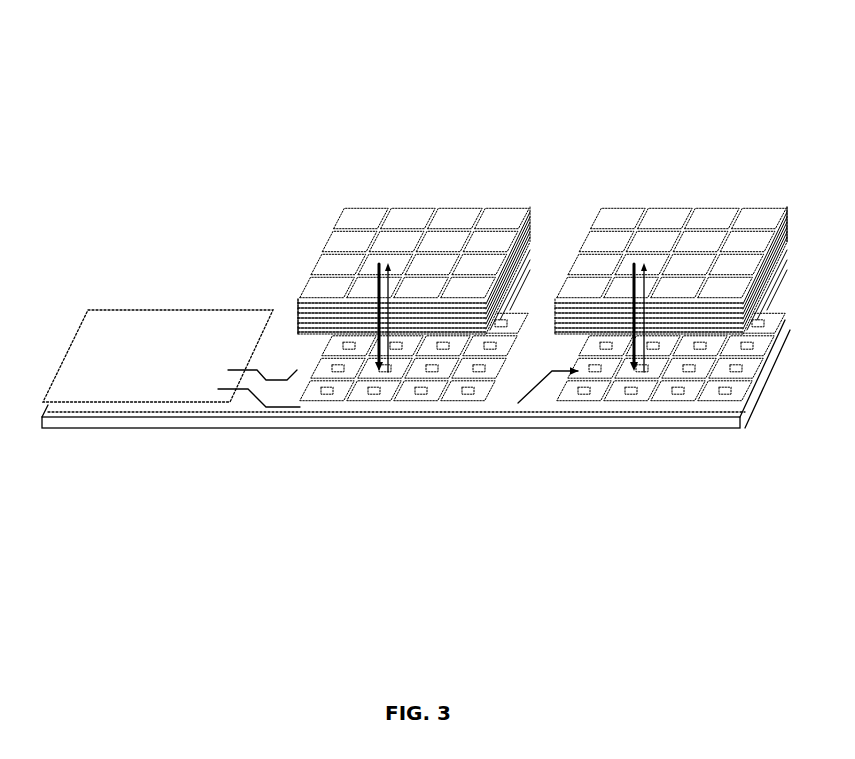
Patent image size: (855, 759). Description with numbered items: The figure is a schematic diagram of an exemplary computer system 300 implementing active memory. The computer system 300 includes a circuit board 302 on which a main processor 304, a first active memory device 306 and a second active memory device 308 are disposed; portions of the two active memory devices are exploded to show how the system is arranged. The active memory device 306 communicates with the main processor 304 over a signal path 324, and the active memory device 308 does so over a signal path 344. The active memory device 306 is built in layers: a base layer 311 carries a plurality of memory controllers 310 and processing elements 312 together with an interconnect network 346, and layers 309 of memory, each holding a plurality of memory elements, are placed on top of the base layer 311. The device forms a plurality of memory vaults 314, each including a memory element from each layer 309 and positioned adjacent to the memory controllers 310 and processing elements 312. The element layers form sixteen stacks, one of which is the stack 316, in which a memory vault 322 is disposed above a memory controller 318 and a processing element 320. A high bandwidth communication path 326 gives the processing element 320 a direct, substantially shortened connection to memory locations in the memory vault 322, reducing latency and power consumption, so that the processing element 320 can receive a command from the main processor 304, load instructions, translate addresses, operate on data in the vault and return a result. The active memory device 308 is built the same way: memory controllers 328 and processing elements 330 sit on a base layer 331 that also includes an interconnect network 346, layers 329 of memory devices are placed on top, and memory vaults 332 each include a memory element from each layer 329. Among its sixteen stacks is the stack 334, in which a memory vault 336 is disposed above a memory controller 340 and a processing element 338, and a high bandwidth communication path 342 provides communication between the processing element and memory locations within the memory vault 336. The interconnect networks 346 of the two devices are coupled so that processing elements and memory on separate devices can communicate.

The computer system 300 is at (322, 86).
The circuit board 302 is at (177, 423).
The main processor 304 is at (158, 356).
The active memory device 306 is at (457, 204).
The active memory device 308 is at (658, 204).
The layers of memory 309 is at (297, 296).
The memory controllers 310 is at (432, 371).
The base layer 311 is at (403, 403).
The processing elements 312 is at (480, 372).
The memory vaults 314 is at (507, 238).
The stack 316 is at (359, 262).
The memory controller 318 is at (383, 373).
The processing element 320 is at (393, 373).
The memory vault 322 is at (370, 258).
The signal path 324 is at (323, 370).
The high bandwidth communication path 326 is at (376, 282).
The memory controllers 328 is at (689, 371).
The layers of memory devices 329 is at (787, 204).
The processing elements 330 is at (737, 372).
The base layer 331 is at (653, 403).
The memory vaults 332 is at (715, 220).
The stack 334 is at (646, 256).
The memory vault 336 is at (633, 264).
The processing element 338 is at (647, 373).
The memory controller 340 is at (639, 373).
The high bandwidth communication path 342 is at (629, 277).
The signal path 344 is at (277, 408).
The interconnect network 346 is at (510, 348).